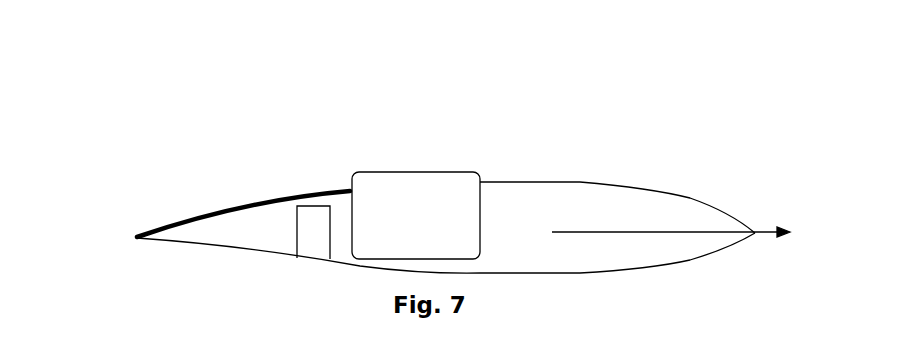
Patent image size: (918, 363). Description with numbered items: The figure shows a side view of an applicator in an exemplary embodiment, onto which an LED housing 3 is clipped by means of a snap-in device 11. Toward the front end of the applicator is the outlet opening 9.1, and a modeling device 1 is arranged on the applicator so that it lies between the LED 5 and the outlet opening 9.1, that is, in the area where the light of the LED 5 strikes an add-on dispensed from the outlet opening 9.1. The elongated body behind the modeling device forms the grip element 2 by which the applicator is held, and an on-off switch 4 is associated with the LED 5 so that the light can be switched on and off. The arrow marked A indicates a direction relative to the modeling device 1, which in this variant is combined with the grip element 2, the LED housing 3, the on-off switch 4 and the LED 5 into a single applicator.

The modeling device 1 is at (150, 232).
The grip element 2 is at (628, 205).
The LED housing 3 is at (425, 183).
The on-off switch 4 is at (381, 168).
The LED 5 is at (345, 185).
The snap-in device 11 is at (435, 230).
The outlet opening 9.1 is at (188, 233).
The direction arrow A is at (282, 223).